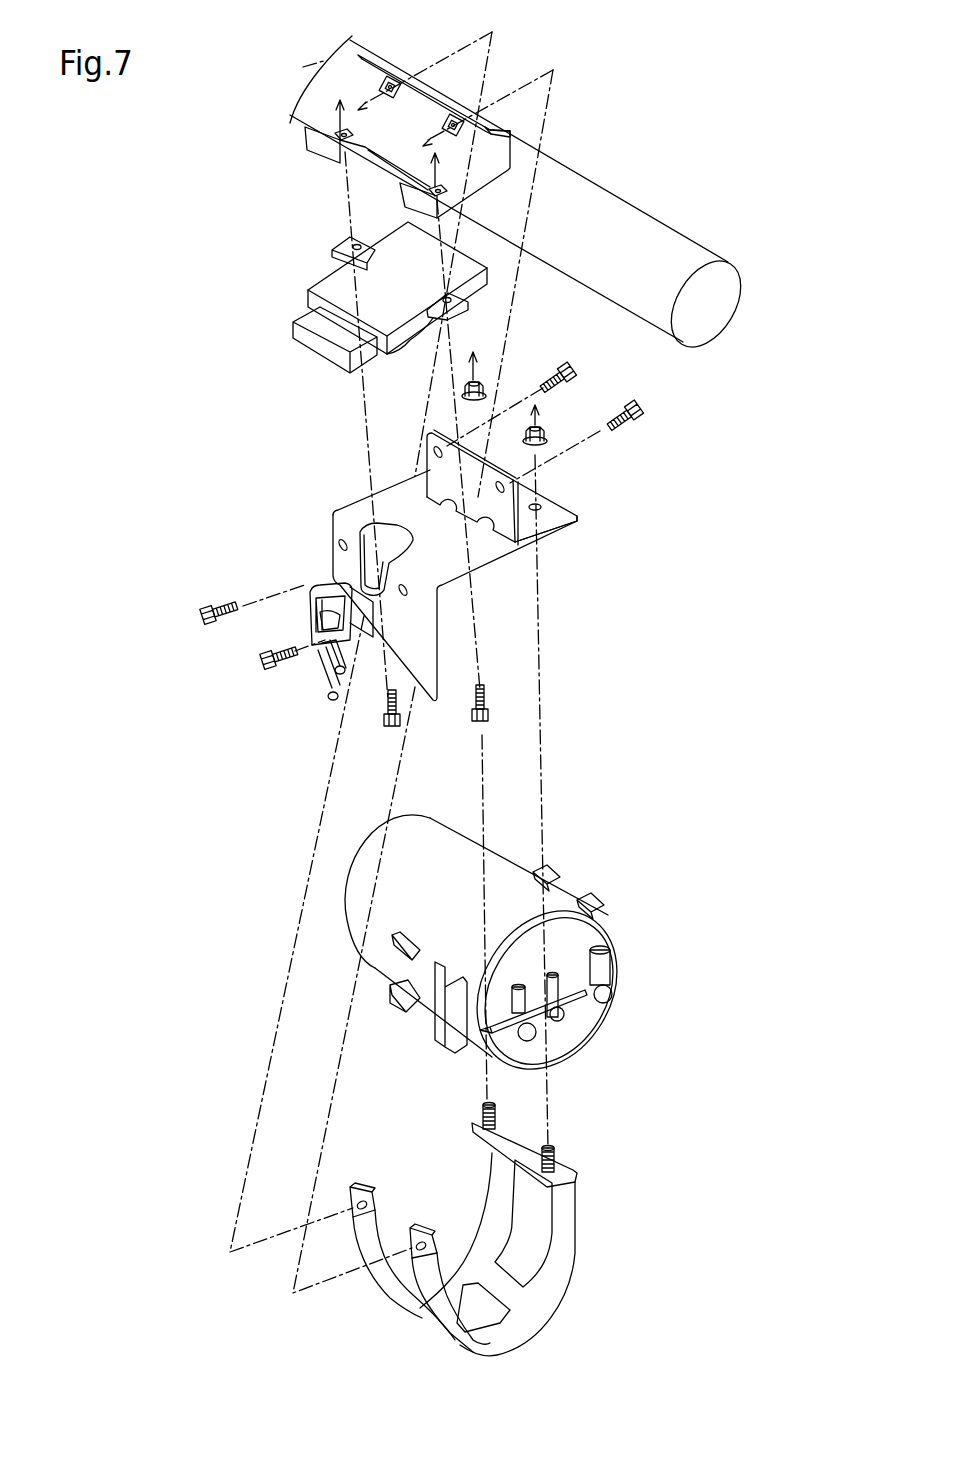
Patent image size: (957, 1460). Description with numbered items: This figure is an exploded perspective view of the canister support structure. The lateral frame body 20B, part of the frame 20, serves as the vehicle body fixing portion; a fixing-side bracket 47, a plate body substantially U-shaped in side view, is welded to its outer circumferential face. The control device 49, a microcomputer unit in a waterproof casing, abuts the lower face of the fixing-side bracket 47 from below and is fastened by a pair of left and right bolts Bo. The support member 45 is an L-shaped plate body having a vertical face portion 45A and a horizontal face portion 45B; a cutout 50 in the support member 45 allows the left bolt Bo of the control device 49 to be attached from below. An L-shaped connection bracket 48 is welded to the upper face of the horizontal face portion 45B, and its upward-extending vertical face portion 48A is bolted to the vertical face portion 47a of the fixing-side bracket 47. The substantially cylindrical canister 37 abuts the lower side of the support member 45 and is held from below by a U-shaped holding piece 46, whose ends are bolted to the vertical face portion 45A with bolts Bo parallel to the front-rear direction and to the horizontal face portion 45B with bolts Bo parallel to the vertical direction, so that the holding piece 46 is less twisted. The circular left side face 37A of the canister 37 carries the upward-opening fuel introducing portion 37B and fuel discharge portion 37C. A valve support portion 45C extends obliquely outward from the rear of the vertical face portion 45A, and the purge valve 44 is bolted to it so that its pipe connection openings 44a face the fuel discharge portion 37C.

The lateral frame body 20B is at (525, 197).
The frame 20 is at (646, 212).
The fixing-side bracket 47 is at (412, 136).
The vertical face portion 47a is at (518, 146).
The control device 49 is at (318, 285).
The support member 45 is at (436, 561).
The vertical face portion 45A is at (333, 530).
The horizontal face portion 45B is at (365, 508).
The valve support portion 45C is at (327, 597).
The cutout 50 is at (400, 537).
The connection bracket 48 is at (534, 526).
The vertical face portion 48A is at (498, 537).
The purge valve 44 is at (283, 649).
The pipe connection openings 44a is at (327, 672).
The bolt Bo is at (200, 615).
The canister 37 is at (495, 961).
The left side face 37A is at (577, 1030).
The fuel introducing portion 37B is at (547, 978).
The fuel discharge portion 37C is at (515, 987).
The holding piece 46 is at (560, 1274).